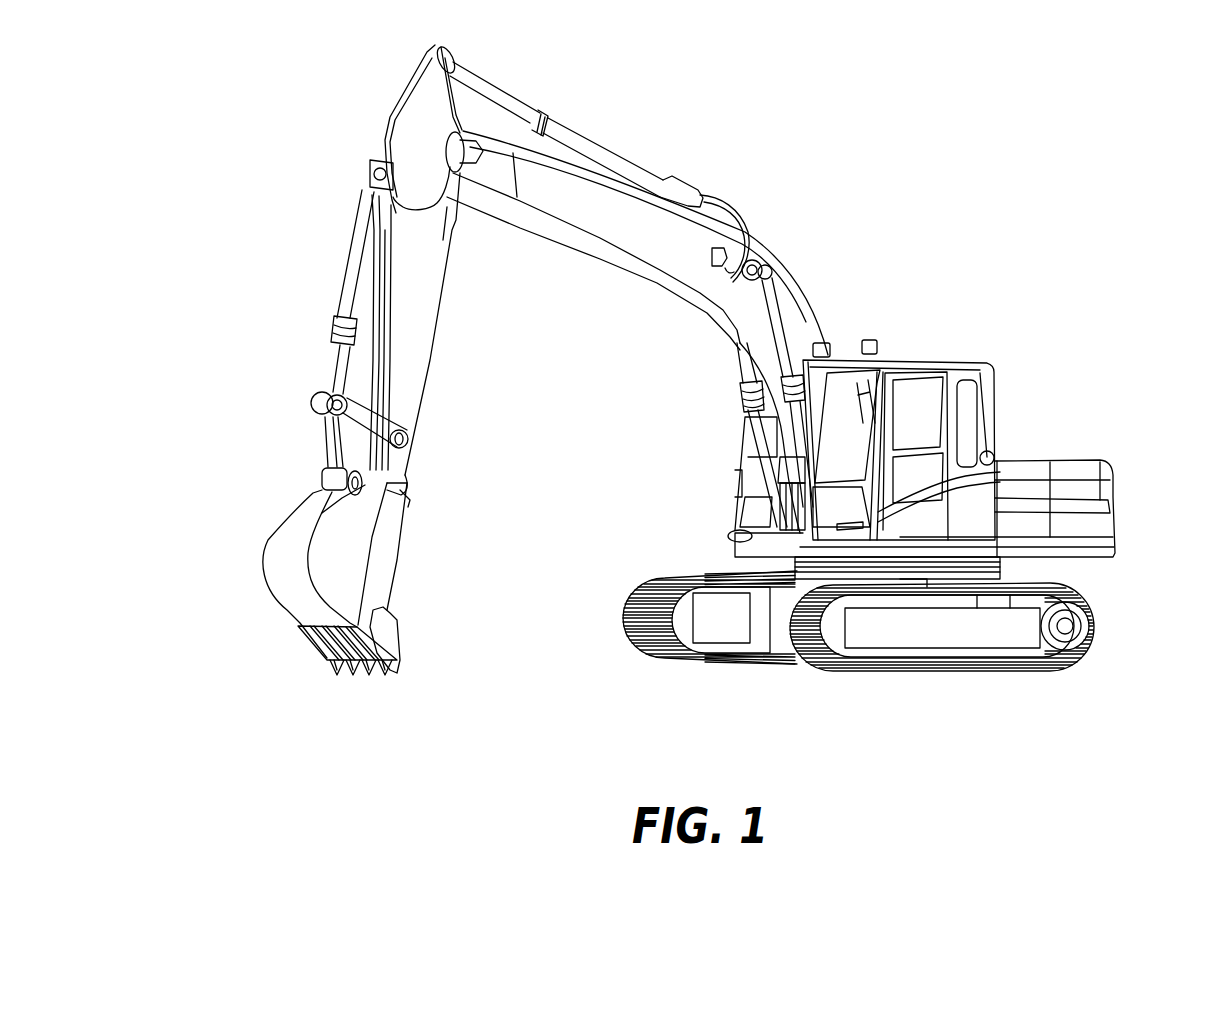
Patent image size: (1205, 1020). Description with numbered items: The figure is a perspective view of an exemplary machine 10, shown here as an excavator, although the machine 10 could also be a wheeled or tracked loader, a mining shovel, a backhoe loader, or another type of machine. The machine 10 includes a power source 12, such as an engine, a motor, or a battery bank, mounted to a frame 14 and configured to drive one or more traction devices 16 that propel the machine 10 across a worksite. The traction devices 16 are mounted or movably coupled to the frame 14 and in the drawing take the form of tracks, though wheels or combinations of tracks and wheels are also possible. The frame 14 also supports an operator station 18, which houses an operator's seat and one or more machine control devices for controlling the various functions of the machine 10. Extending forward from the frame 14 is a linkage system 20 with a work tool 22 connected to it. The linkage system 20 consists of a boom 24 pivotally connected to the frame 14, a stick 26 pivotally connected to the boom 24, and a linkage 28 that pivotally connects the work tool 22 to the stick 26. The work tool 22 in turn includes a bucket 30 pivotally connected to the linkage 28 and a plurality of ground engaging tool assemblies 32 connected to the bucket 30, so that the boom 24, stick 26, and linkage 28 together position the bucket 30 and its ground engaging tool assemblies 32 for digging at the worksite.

The machine 10 is at (1070, 197).
The power source 12 is at (1085, 445).
The frame 14 is at (738, 540).
The traction device 16 is at (655, 658).
The operator station 18 is at (958, 345).
The linkage system 20 is at (526, 302).
The work tool 22 is at (250, 527).
The boom 24 is at (669, 258).
The stick 26 is at (426, 265).
The linkage 28 is at (308, 406).
The bucket 30 is at (405, 542).
The ground engaging tool assemblies 32 is at (375, 678).